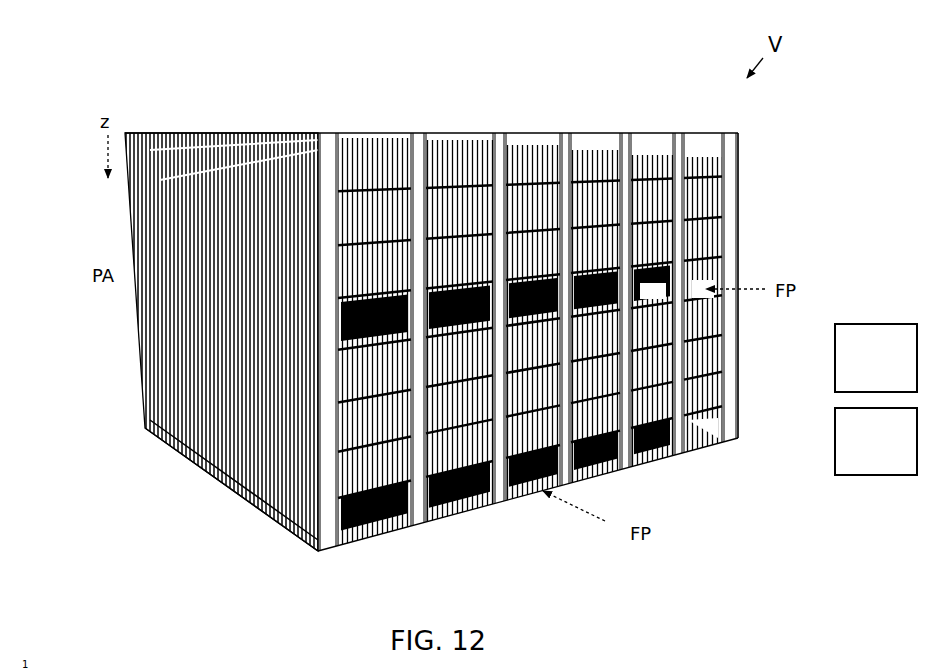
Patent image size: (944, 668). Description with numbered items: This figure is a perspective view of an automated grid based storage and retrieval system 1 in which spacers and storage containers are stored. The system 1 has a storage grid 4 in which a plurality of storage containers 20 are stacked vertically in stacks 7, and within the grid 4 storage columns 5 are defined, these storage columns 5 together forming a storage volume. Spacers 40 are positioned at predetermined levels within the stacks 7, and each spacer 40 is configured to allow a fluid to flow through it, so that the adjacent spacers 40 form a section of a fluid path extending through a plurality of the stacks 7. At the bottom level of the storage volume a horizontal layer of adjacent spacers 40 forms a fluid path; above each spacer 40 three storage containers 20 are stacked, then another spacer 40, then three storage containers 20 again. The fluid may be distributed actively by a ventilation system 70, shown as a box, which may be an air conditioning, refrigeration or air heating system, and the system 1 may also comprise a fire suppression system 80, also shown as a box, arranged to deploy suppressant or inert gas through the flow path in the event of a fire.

The automated grid based storage and retrieval system 1 is at (98, 74).
The storage grid 4 is at (733, 265).
The storage column 5 is at (147, 413).
The stack 7 is at (360, 118).
The storage container 20 is at (706, 185).
The spacer 40 is at (238, 316).
The ventilation system 70 is at (876, 358).
The fire suppression system 80 is at (876, 441).